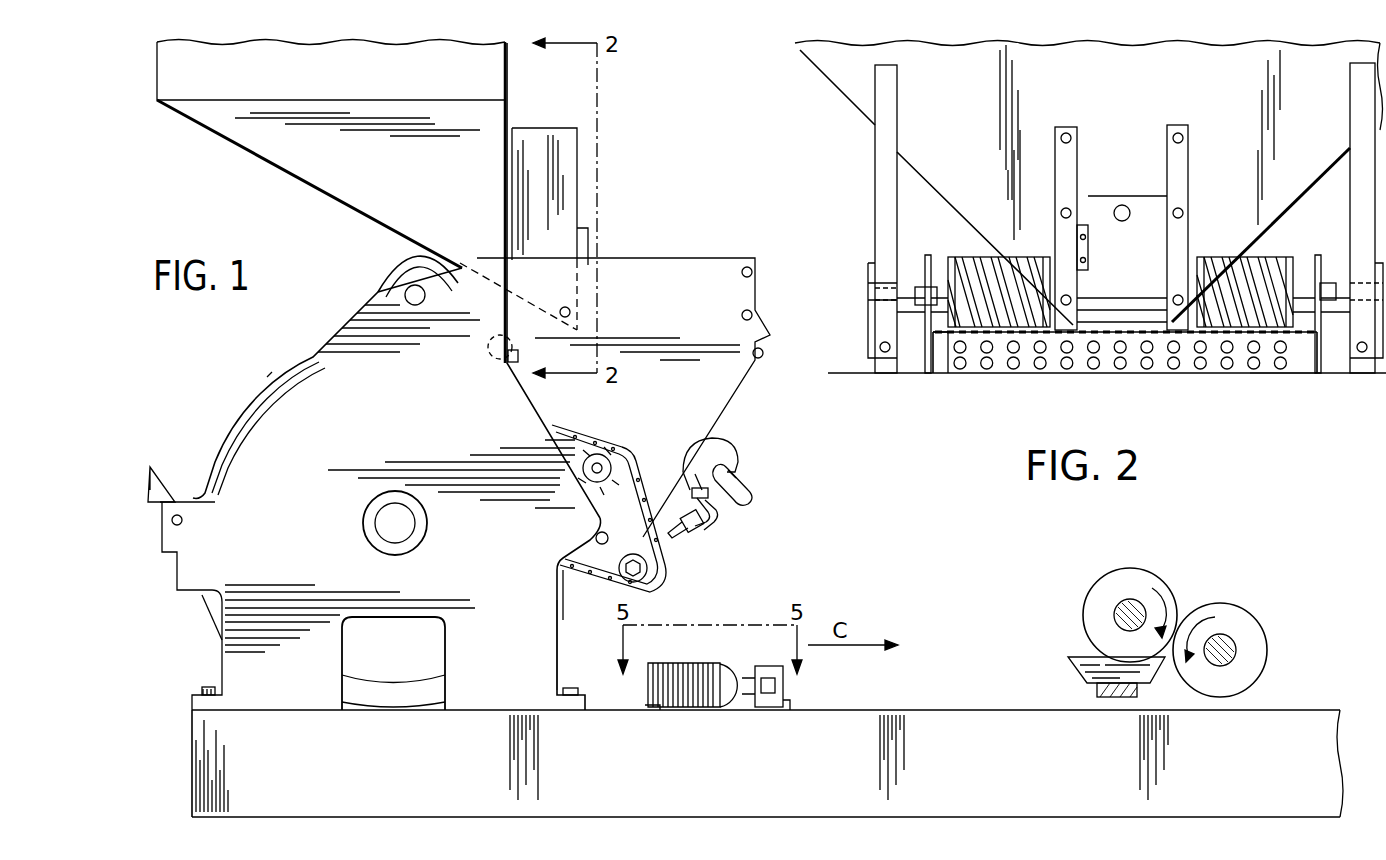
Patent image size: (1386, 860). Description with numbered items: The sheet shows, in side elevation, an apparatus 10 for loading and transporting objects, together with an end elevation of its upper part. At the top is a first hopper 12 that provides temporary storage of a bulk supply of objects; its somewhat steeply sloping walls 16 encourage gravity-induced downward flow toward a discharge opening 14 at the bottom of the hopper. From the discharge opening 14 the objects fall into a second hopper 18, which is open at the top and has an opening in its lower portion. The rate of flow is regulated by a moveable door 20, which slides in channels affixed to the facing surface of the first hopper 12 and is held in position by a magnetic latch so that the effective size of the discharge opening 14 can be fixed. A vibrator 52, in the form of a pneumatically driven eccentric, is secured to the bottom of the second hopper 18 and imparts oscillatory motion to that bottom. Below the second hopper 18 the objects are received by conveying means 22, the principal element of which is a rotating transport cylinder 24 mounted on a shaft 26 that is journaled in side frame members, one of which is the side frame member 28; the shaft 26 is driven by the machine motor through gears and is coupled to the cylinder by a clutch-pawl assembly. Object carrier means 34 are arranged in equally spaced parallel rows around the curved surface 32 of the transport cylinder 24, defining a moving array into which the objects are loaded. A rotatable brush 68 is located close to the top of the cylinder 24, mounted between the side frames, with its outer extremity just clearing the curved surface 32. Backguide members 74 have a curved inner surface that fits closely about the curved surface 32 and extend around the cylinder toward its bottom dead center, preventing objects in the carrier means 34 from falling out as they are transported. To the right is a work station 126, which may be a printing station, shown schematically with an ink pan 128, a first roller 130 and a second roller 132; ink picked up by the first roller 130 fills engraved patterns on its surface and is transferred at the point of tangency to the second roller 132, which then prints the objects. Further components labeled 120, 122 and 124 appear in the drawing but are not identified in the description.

In FIG. 1, the apparatus 10 is at (790, 490).
In FIG. 1, the first hopper 12 is at (360, 189).
In FIG. 2, the discharge opening 14 is at (1097, 315).
In FIG. 1, the sloping walls 16 is at (315, 193).
In FIG. 2, the sloping walls 16 is at (1290, 202).
In FIG. 1, the second hopper 18 is at (652, 322).
In FIG. 2, the moveable door 20 is at (1160, 255).
In FIG. 1, the conveying means 22 is at (563, 642).
In FIG. 2, the conveying means 22 is at (1266, 388).
In FIG. 2, the rotating transport cylinder 24 is at (1215, 368).
In FIG. 1, the shaft 26 is at (403, 527).
In FIG. 1, the side frame member 28 is at (487, 655).
In FIG. 1, the curved surface 32 is at (563, 590).
In FIG. 2, the curved surface 32 is at (978, 374).
In FIG. 2, the object carrier means 34 is at (960, 374).
In FIG. 1, the vibrator 52 is at (720, 440).
In FIG. 1, the rotatable brush 68 is at (392, 282).
In FIG. 2, the rotatable brush 68 is at (975, 255).
In FIG. 1, the backguide members 74 is at (213, 615).
In FIG. 1, the drive sprocket 120 is at (660, 555).
In FIG. 1, the drive chain 122 is at (615, 452).
In FIG. 1, the cylinder 124 is at (395, 700).
In FIG. 1, the work station 126 is at (1118, 553).
In FIG. 1, the ink pan 128 is at (1072, 680).
In FIG. 1, the first roller 130 is at (1140, 585).
In FIG. 1, the second roller 132 is at (1262, 635).